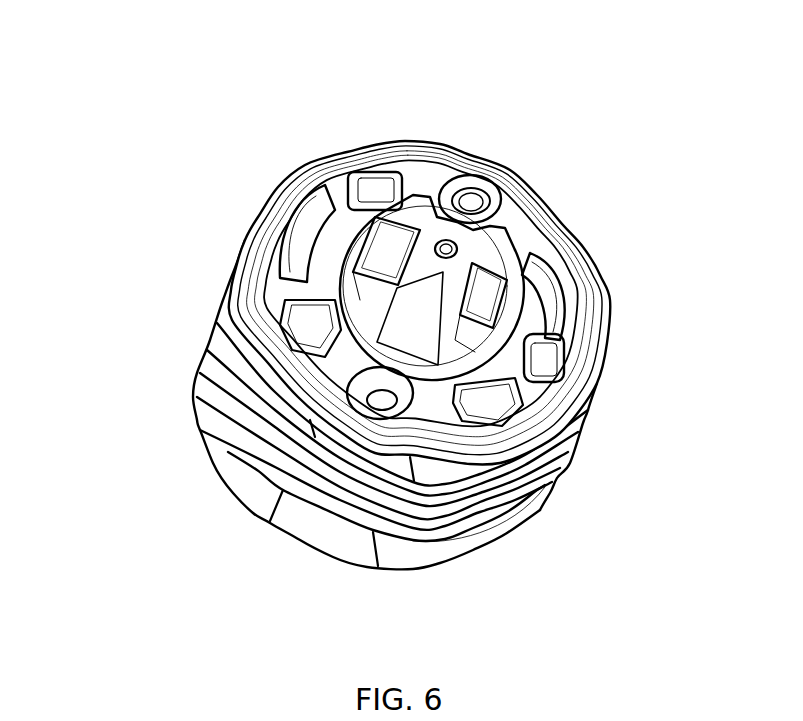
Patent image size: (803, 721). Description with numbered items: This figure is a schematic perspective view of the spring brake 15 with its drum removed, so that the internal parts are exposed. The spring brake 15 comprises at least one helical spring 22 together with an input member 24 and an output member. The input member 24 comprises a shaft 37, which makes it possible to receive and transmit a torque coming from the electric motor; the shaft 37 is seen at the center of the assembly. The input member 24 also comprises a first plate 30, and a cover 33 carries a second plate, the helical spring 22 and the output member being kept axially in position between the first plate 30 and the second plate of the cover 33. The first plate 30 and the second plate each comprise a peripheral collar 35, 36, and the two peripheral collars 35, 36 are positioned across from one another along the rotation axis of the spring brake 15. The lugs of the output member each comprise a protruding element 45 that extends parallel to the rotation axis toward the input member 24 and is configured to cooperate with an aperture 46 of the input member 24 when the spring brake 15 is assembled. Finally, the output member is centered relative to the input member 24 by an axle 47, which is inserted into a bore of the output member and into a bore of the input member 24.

The spring brake 15 is at (167, 121).
The helical spring 22 is at (552, 482).
The input member 24 is at (517, 217).
The first plate 30 is at (418, 173).
The cover 33 is at (407, 552).
The peripheral collar 35 is at (275, 393).
The peripheral collar 36 is at (470, 472).
The shaft 37 is at (380, 260).
The protruding element 45 is at (368, 197).
The aperture 46 is at (293, 210).
The axle 47 is at (453, 248).